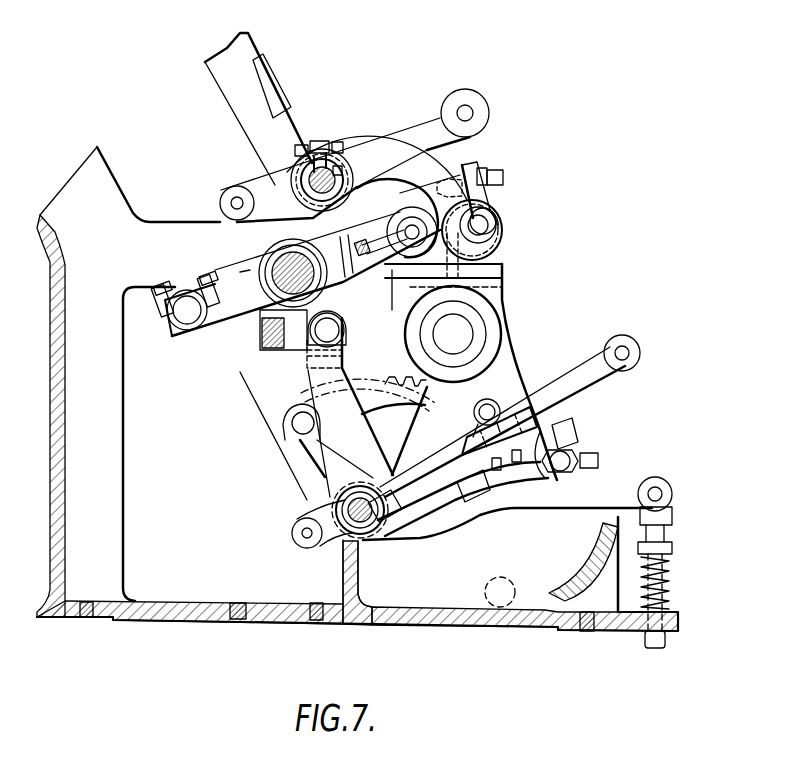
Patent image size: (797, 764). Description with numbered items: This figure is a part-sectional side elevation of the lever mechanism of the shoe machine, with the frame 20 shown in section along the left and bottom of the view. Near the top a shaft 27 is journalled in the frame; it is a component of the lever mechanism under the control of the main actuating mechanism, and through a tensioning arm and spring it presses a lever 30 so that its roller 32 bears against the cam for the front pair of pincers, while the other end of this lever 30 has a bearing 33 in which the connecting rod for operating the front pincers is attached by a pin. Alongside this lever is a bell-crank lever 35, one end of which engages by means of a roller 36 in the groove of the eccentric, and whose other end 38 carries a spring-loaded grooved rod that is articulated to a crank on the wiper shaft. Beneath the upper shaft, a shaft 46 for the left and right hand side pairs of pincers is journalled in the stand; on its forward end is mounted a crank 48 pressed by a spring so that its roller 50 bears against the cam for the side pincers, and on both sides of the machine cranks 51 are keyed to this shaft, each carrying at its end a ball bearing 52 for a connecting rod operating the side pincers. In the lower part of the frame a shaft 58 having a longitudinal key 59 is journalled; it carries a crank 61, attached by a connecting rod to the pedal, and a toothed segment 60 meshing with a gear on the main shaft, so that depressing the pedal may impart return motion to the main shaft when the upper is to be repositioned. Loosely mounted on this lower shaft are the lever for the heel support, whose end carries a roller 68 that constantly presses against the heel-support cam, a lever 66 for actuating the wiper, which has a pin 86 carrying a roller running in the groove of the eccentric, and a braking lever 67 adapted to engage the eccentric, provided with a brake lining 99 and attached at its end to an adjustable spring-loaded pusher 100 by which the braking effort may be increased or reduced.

The frame 20 is at (75, 187).
The shaft 27 is at (320, 168).
The lever 30 is at (508, 215).
The roller 32 is at (490, 220).
The bearing 33 is at (234, 192).
The bell-crank lever 35 is at (387, 200).
The roller 36 is at (500, 250).
The other end of bell-crank lever 38 is at (465, 90).
The shaft 46 is at (337, 289).
The crank 48 is at (343, 238).
The roller 50 is at (462, 195).
The cranks 51 is at (182, 300).
The ball bearings 52 is at (182, 300).
The shaft 58 is at (367, 525).
The longitudinal key 59 is at (345, 523).
The toothed segment 60 is at (413, 383).
The crank 61 is at (292, 540).
The lever 66 is at (590, 392).
The lever 67 is at (565, 445).
The roller 68 is at (305, 364).
The pin 86 is at (497, 410).
The brake lining 99 is at (562, 434).
The spring loaded pusher 100 is at (667, 482).